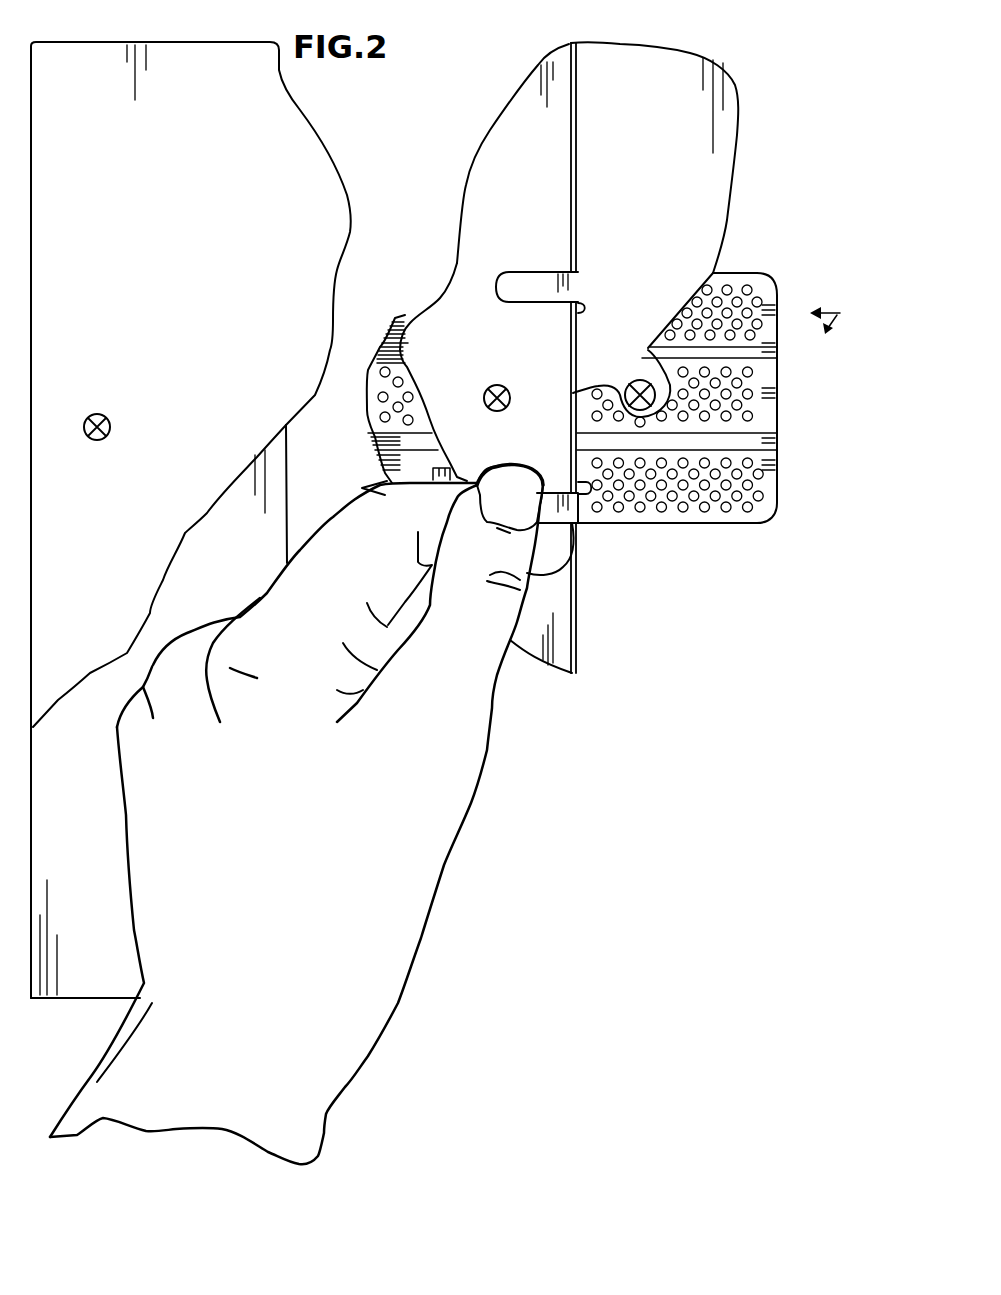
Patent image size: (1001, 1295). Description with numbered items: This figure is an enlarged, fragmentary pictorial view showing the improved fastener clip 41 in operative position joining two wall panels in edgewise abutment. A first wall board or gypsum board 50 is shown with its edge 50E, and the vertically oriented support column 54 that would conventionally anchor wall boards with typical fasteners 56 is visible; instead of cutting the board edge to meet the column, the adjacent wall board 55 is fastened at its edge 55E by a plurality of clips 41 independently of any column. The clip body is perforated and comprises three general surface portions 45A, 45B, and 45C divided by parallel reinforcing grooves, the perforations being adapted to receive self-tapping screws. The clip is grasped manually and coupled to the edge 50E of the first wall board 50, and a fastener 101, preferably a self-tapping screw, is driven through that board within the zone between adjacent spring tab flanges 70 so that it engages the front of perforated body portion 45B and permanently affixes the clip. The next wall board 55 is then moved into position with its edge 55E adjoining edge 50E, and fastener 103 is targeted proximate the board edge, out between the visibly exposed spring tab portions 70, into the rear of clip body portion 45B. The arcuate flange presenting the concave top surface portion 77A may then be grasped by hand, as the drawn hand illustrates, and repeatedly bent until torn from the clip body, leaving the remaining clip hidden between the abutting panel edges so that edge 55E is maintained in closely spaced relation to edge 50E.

The clip 41 is at (843, 311).
The surface portion of clip body 45A is at (748, 274).
The perforated body portion 45B is at (368, 408).
The surface portion of clip body 45C is at (770, 480).
The wall board 50 is at (216, 244).
The edge of wall board 50E is at (575, 575).
The support column 54 is at (244, 571).
The wall board 55 is at (666, 146).
The edge of wall board 55E is at (578, 73).
The fastener 56 is at (111, 426).
The spring tab flange 70 is at (499, 309).
The concave top surface portion 77A is at (521, 284).
The fastener 101 is at (494, 387).
The fastener 103 is at (622, 386).